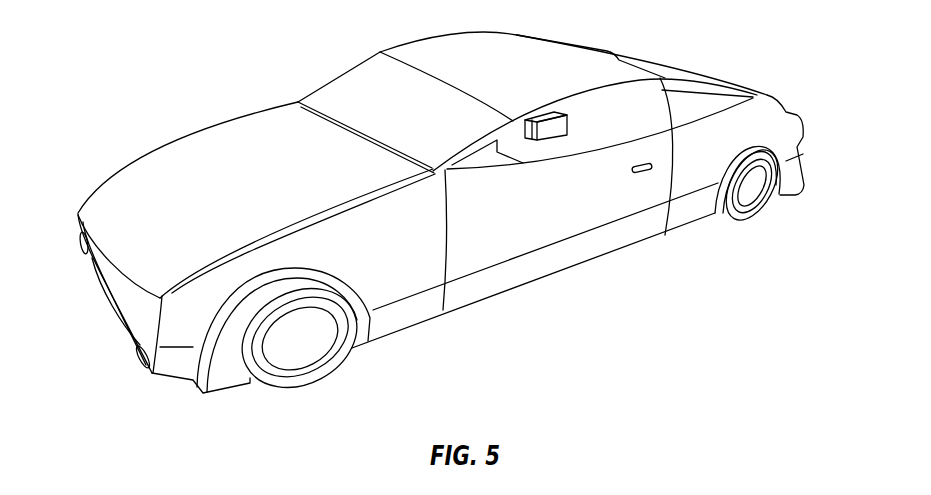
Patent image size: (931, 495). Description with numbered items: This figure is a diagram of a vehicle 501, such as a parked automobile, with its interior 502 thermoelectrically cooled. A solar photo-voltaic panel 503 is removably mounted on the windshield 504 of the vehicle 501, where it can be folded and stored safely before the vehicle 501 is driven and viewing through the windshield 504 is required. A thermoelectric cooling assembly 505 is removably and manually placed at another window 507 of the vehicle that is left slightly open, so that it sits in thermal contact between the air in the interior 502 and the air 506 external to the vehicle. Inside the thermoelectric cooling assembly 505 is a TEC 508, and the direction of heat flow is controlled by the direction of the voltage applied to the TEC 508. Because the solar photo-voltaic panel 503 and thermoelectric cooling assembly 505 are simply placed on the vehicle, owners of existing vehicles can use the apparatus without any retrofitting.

The vehicle 501 is at (177, 157).
The interior 502 is at (657, 124).
The solar photo-voltaic panel 503 is at (337, 92).
The windshield 504 is at (372, 55).
The thermoelectric cooling assembly 505 is at (558, 141).
The air external to the vehicle 506 is at (777, 282).
The window 507 is at (525, 141).
The TEC 508 is at (541, 141).